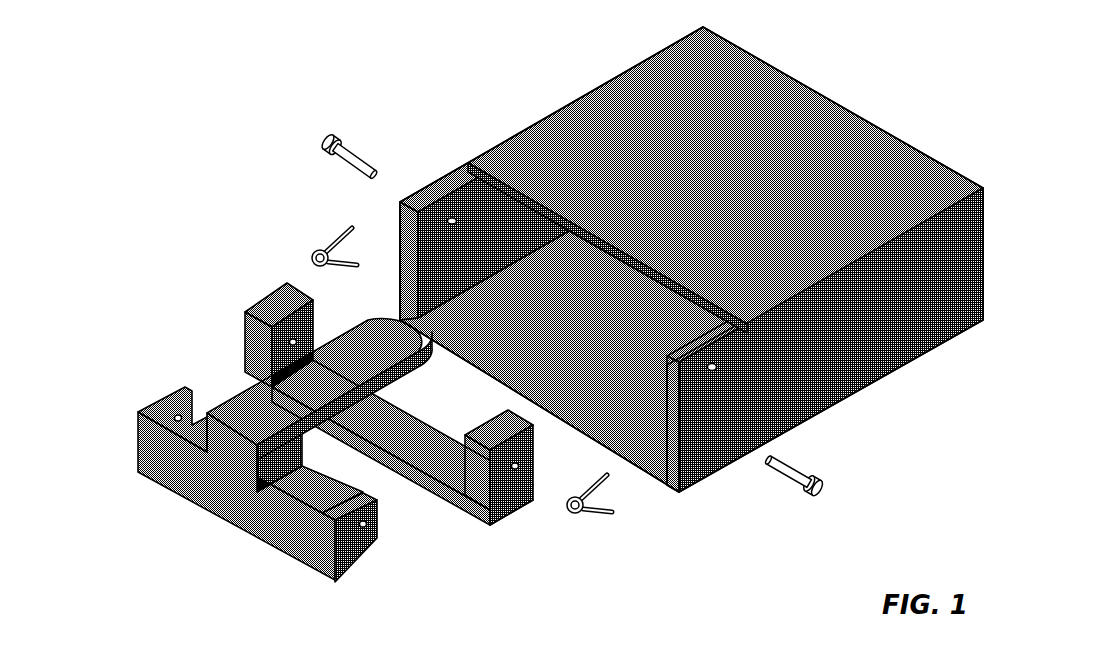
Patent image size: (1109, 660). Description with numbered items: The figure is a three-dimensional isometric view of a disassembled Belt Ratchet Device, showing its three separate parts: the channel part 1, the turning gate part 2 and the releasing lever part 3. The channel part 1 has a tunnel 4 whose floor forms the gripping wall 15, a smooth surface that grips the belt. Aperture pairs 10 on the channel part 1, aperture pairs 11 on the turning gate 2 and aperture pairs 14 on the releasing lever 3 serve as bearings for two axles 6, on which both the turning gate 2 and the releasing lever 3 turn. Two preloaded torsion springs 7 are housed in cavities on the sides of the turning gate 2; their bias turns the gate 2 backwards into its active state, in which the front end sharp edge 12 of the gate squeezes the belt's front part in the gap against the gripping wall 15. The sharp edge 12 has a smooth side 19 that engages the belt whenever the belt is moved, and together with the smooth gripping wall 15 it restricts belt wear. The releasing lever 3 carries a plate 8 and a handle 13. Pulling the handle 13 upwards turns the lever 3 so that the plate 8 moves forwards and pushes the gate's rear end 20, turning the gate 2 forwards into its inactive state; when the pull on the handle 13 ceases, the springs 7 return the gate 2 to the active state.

The channel part 1 is at (653, 259).
The turning gate part 2 is at (262, 305).
The releasing lever part 3 is at (328, 431).
The tunnel 4 is at (557, 268).
The axles 6 is at (355, 165).
The torsion springs 7 is at (320, 253).
The plate 8 is at (267, 530).
The apertures pair 10 is at (448, 220).
The apertures pair 11 is at (293, 345).
The front end sharp edge 12 is at (530, 528).
The handle 13 is at (352, 362).
The apertures pair 14 is at (178, 415).
The gripping wall 15 is at (592, 372).
The smooth side 19 is at (508, 523).
The gate's rear end 20 is at (463, 490).